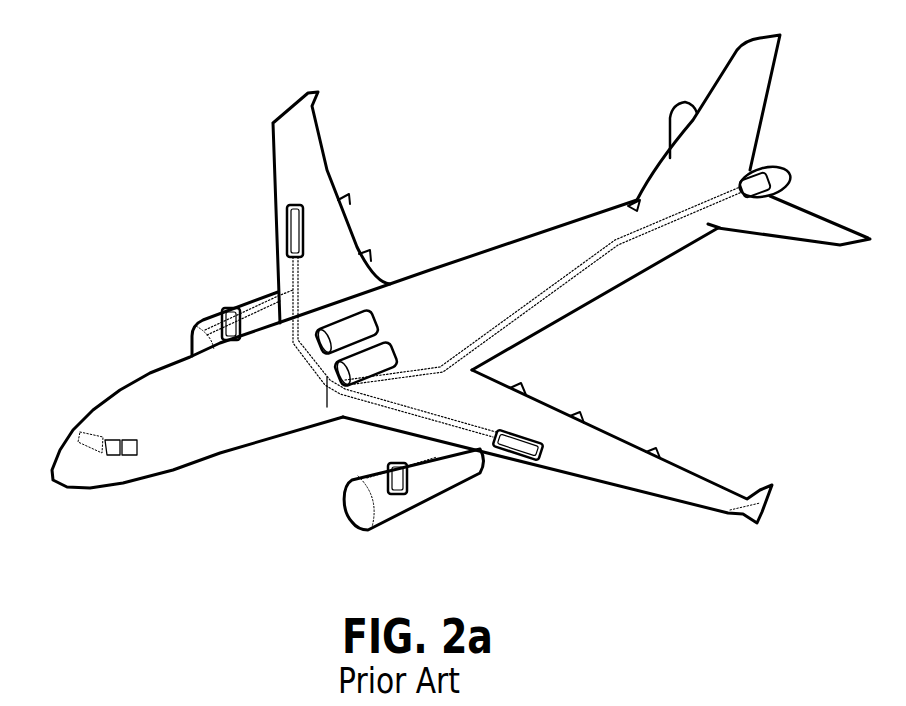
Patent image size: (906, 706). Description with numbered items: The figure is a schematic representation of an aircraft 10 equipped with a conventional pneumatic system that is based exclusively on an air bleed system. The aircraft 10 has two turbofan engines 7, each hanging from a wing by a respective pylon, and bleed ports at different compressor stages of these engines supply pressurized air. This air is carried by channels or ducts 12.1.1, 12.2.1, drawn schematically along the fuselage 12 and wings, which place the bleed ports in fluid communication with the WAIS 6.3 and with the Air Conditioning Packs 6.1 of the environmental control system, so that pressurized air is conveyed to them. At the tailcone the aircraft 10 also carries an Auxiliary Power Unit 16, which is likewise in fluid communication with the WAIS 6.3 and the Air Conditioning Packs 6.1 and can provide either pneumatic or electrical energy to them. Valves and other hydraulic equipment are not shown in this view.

The aircraft 10 is at (130, 318).
The fuselage 12 is at (285, 402).
The turbofan engine 7 is at (257, 307).
The Air Conditioning Pack 6.1 is at (357, 327).
The WAIS 6.3 is at (300, 213).
The Auxiliary Power Unit 16 is at (773, 167).
The channel or duct 12.1.1 is at (433, 455).
The channel or duct 12.2.1 is at (537, 573).